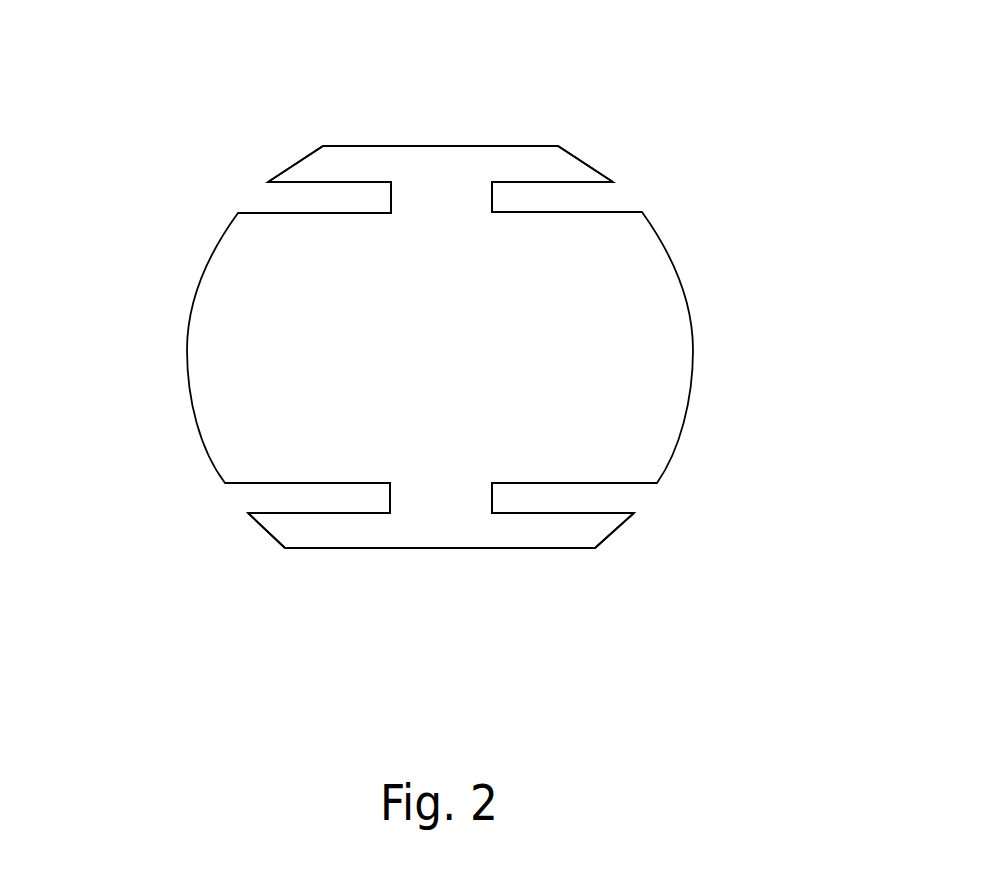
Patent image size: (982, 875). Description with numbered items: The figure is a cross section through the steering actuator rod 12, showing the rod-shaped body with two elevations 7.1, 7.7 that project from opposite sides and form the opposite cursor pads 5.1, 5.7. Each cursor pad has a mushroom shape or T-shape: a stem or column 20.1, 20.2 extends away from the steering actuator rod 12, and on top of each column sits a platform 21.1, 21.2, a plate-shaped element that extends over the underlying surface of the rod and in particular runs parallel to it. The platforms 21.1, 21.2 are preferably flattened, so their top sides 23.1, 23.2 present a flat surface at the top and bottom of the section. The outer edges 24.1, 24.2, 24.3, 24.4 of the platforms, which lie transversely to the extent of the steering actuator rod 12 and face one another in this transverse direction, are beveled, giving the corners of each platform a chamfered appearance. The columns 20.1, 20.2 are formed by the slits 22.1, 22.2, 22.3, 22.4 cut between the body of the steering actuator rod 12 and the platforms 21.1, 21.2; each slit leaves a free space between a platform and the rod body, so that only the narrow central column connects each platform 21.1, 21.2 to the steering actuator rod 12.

The steering actuator rod 12 is at (218, 347).
The slit 22.1 is at (303, 202).
The slit 22.2 is at (610, 195).
The slit 22.3 is at (277, 497).
The slit 22.4 is at (597, 493).
The outer edge 24.1 is at (297, 155).
The outer edge 24.2 is at (588, 167).
The outer edge 24.3 is at (263, 537).
The outer edge 24.4 is at (613, 537).
The top side 23.1 is at (340, 147).
The top side 23.2 is at (320, 548).
The elevation 7.1 is at (413, 160).
The elevation 7.7 is at (423, 530).
The column 20.1 is at (442, 197).
The column 20.2 is at (450, 512).
The cursor pad 5.1 is at (479, 147).
The cursor pad 5.7 is at (560, 548).
The platform 21.1 is at (525, 157).
The platform 21.2 is at (380, 530).